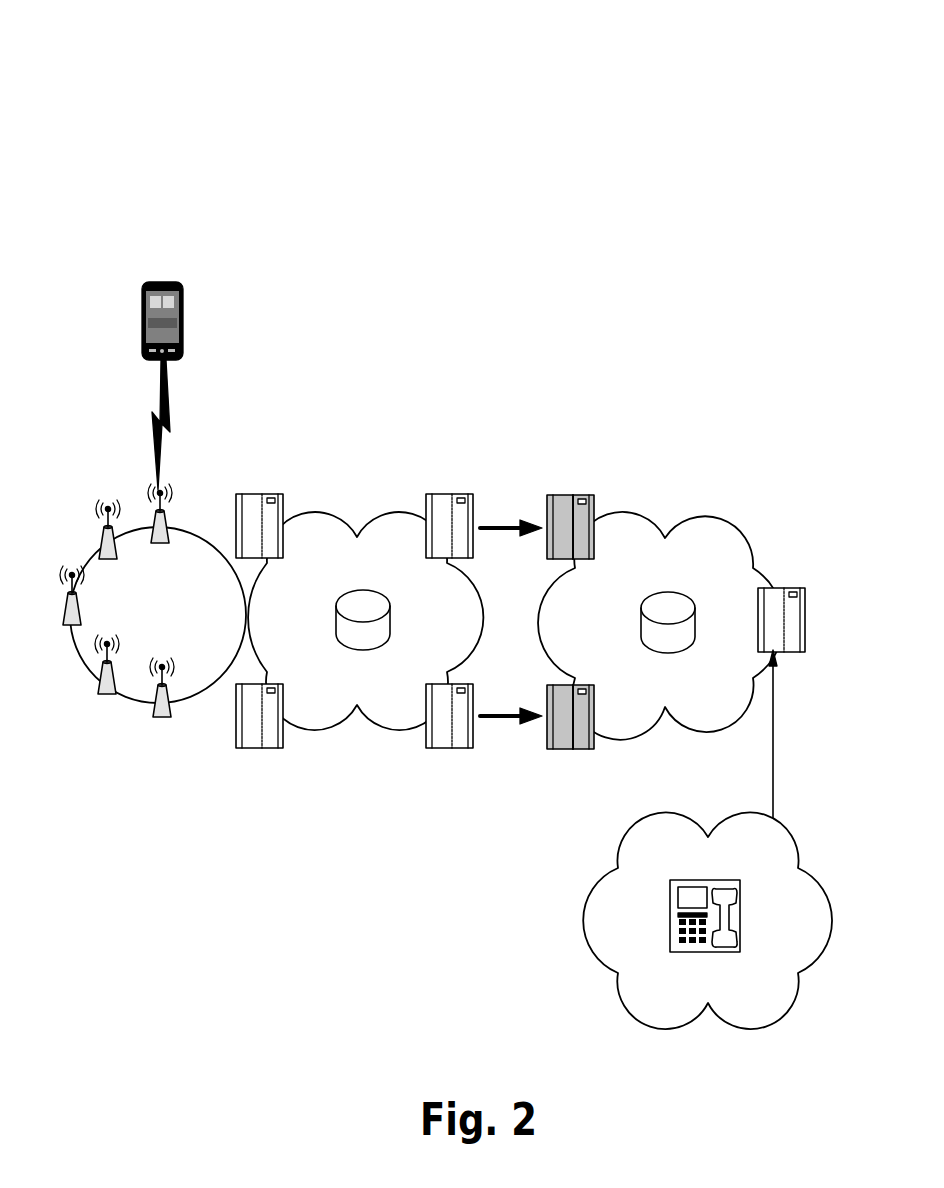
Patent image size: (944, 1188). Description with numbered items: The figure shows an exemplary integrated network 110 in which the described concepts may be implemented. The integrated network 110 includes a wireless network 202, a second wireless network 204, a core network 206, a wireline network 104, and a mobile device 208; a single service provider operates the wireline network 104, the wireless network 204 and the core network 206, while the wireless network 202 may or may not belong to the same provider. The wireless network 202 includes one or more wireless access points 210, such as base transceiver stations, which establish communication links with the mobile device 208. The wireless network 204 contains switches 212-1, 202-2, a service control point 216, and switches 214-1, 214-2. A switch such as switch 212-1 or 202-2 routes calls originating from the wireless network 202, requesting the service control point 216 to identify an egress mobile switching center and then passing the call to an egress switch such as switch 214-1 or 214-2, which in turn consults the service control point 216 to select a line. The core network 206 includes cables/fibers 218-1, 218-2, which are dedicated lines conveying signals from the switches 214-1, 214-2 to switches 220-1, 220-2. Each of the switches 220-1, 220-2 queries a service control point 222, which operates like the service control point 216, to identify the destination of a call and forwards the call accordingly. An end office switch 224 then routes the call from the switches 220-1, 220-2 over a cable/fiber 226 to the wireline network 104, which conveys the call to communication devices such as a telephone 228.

The integrated network 110 is at (509, 90).
The wireline network 104 is at (583, 915).
The wireless network 202 is at (133, 703).
The wireless network 204 is at (322, 512).
The core network 206 is at (702, 515).
The mobile device 208 is at (168, 282).
The wireless access point 210 is at (103, 527).
The switch 212-1 is at (250, 494).
The switch 202-2 is at (250, 748).
The switch 214-1 is at (437, 494).
The switch 214-2 is at (437, 748).
The service control point 216 is at (337, 610).
The cable/fiber 218-1 is at (514, 522).
The cable/fiber 218-2 is at (495, 720).
The switch 220-1 is at (577, 496).
The switch 220-2 is at (577, 748).
The service control point 222 is at (695, 612).
The end office switch 224 is at (790, 588).
The cable/fiber 226 is at (775, 770).
The telephone 228 is at (670, 908).